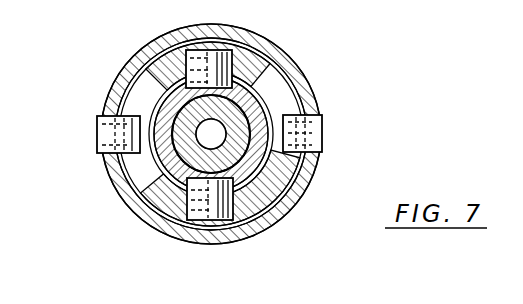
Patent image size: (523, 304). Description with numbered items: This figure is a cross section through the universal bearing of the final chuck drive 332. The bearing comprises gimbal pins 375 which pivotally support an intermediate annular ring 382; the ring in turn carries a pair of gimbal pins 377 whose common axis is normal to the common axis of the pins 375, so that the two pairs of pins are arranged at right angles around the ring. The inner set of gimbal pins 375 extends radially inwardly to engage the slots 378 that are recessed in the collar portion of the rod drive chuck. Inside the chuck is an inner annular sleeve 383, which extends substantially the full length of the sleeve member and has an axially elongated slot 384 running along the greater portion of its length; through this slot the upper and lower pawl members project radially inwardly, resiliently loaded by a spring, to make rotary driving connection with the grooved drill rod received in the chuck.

The final chuck drive 332 is at (243, 247).
The gimbal pins 375 is at (100, 132).
The gimbal pins 377 is at (197, 62).
The slots 378 is at (275, 87).
The intermediate annular ring 382 is at (183, 100).
The inner annular sleeve 383 is at (258, 160).
The axially elongated slot 384 is at (176, 106).